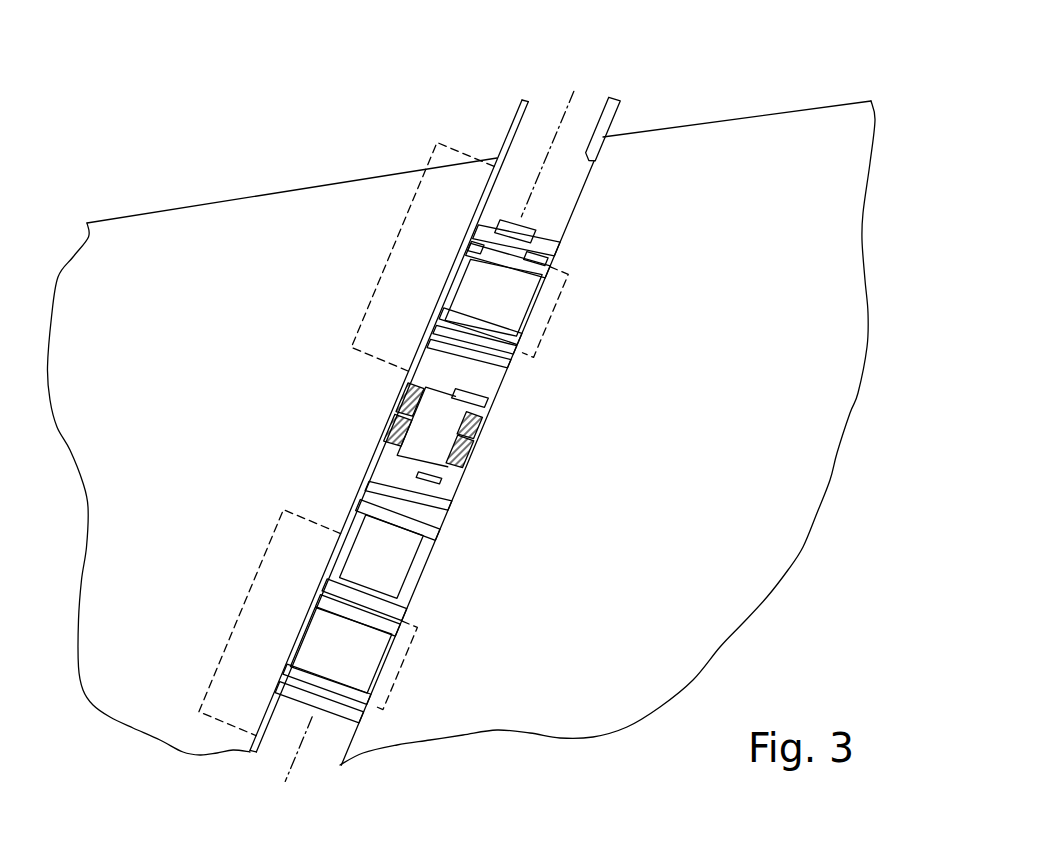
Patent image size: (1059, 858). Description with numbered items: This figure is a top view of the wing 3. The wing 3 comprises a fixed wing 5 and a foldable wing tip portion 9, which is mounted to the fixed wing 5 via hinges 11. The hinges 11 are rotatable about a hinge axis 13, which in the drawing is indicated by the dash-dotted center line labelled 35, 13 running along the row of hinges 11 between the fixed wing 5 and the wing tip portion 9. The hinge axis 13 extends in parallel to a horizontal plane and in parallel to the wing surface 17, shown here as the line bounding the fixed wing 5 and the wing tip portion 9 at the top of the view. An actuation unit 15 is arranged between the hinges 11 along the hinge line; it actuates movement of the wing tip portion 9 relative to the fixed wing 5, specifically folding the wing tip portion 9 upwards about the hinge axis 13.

The wing 3 is at (401, 114).
The fixed wing 5 is at (696, 374).
The foldable wing tip portion 9 is at (200, 404).
The hinges 11 is at (540, 238).
The hinge axis 13 is at (298, 749).
The actuation unit 15 is at (447, 427).
The wing surface 17 is at (706, 146).
The center line 35 is at (561, 132).